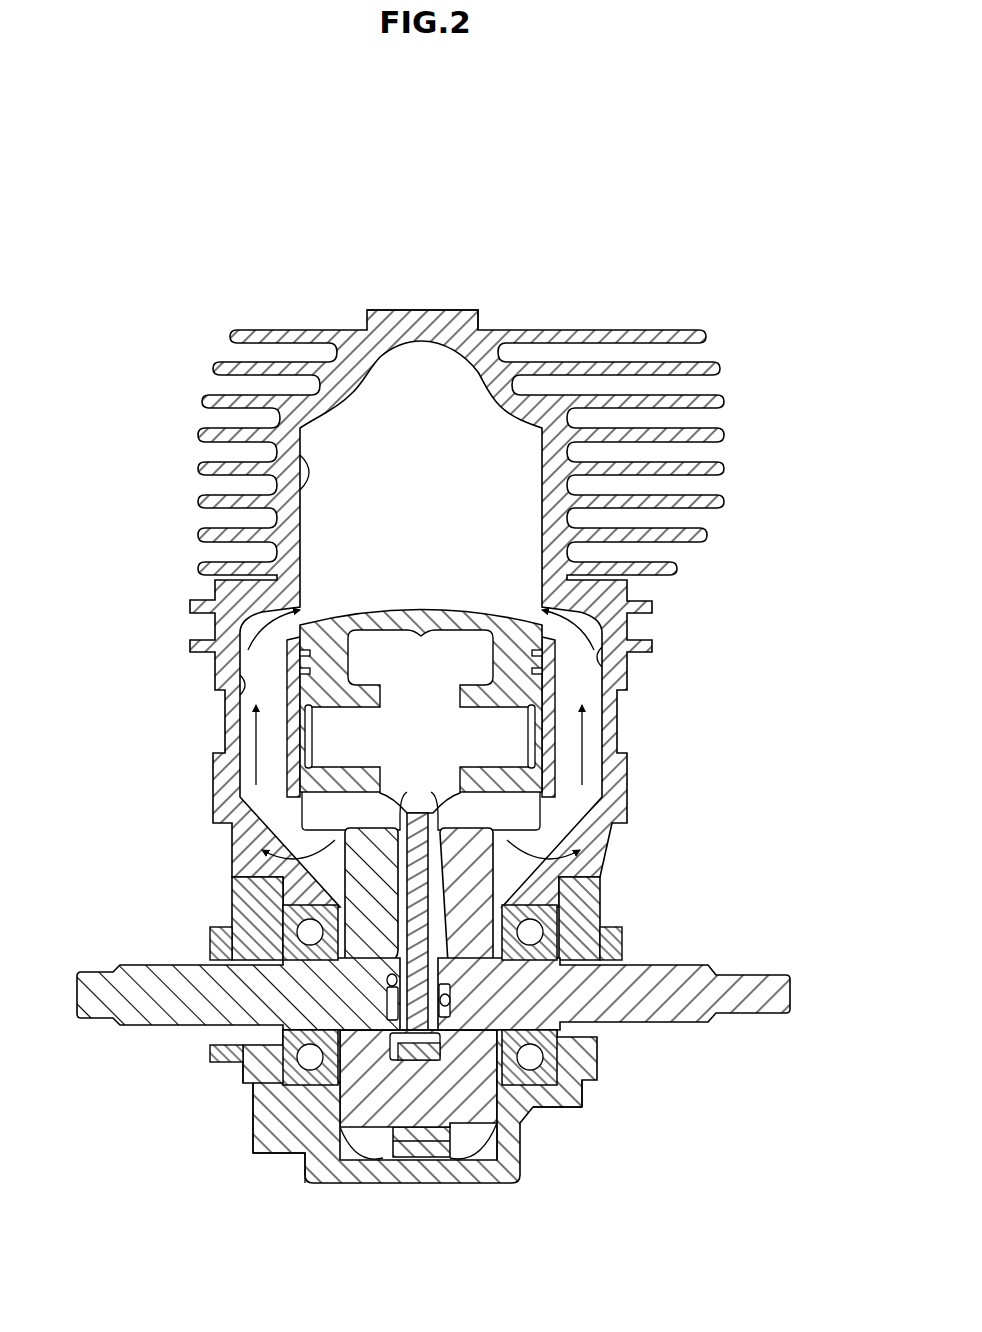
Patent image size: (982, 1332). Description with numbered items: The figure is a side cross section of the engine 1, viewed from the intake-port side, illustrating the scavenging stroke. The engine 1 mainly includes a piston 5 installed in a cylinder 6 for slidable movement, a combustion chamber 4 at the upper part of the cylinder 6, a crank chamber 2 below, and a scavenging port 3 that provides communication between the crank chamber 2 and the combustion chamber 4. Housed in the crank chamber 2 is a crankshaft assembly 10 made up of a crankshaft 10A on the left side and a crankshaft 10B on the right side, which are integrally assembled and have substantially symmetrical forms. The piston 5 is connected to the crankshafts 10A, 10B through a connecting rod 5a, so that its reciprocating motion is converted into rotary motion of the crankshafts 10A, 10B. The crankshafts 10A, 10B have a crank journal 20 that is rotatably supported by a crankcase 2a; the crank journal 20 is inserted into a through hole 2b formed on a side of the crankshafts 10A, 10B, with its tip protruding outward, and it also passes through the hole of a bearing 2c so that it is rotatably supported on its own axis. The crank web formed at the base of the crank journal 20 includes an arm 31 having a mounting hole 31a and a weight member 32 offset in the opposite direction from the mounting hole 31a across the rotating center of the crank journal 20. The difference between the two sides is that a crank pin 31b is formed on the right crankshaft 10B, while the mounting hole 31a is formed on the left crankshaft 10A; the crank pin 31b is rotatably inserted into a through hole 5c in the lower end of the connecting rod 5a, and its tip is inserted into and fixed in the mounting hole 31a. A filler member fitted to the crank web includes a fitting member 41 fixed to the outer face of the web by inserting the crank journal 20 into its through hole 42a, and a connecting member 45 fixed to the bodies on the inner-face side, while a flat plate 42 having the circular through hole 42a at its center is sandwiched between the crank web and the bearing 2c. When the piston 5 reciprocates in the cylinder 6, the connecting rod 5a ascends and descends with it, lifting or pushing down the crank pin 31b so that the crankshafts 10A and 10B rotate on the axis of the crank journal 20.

The engine 1 is at (330, 230).
The crank chamber 2 is at (248, 868).
The crankcase 2a is at (270, 1127).
The through hole 2b is at (228, 940).
The bearing 2c is at (262, 893).
The scavenging port 3 is at (227, 703).
The combustion chamber 4 is at (417, 380).
The piston 5 is at (452, 607).
The connecting rod 5a is at (435, 958).
The through hole 5c is at (396, 1160).
The cylinder 6 is at (270, 484).
The crankshaft assembly 10 is at (705, 888).
The crankshaft 10A is at (135, 1022).
The crankshaft 10B is at (700, 1025).
The crank journal 20 is at (150, 975).
The arm 31 is at (495, 1150).
The mounting hole 31a is at (305, 1175).
The crank pin 31b is at (447, 1130).
The weight member 32 is at (367, 868).
The fitting member 41 is at (267, 1097).
The flat plate 42 is at (247, 1082).
The through hole 42a is at (285, 1028).
The connecting member 45 is at (386, 980).